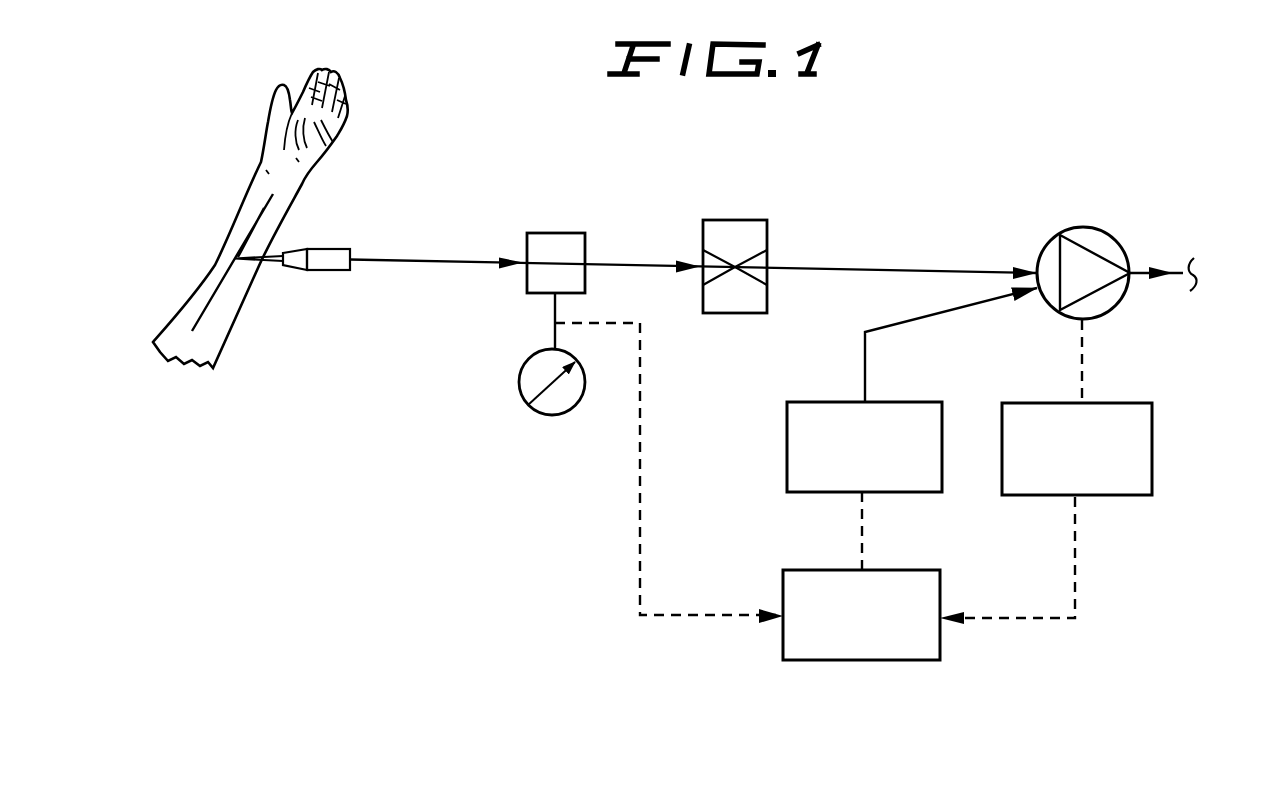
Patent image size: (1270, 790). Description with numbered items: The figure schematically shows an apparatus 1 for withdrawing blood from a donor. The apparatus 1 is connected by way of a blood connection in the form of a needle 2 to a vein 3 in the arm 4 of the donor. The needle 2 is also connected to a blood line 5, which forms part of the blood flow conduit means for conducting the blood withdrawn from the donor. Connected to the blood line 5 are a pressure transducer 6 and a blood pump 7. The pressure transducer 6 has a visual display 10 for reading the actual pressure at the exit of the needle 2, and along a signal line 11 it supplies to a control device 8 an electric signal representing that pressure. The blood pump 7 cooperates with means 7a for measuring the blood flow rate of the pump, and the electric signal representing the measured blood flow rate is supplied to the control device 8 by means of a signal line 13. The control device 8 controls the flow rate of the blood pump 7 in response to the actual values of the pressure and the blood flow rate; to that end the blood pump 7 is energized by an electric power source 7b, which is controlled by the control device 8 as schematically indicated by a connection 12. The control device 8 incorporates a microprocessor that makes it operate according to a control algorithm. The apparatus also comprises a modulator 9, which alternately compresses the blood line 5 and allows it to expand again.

The apparatus 1 is at (793, 184).
The needle 2 is at (337, 247).
The vein 3 is at (250, 213).
The arm 4 is at (256, 178).
The blood line 5 is at (470, 267).
The pressure transducer 6 is at (543, 230).
The blood pump 7 is at (1100, 228).
The means for measuring the blood flow rate 7a is at (1113, 407).
The electric power source 7b is at (832, 400).
The control device 8 is at (883, 662).
The modulator 9 is at (745, 188).
The visual display 10 is at (527, 362).
The signal line 11 is at (673, 613).
The connection 12 is at (858, 520).
The signal line 13 is at (1080, 550).